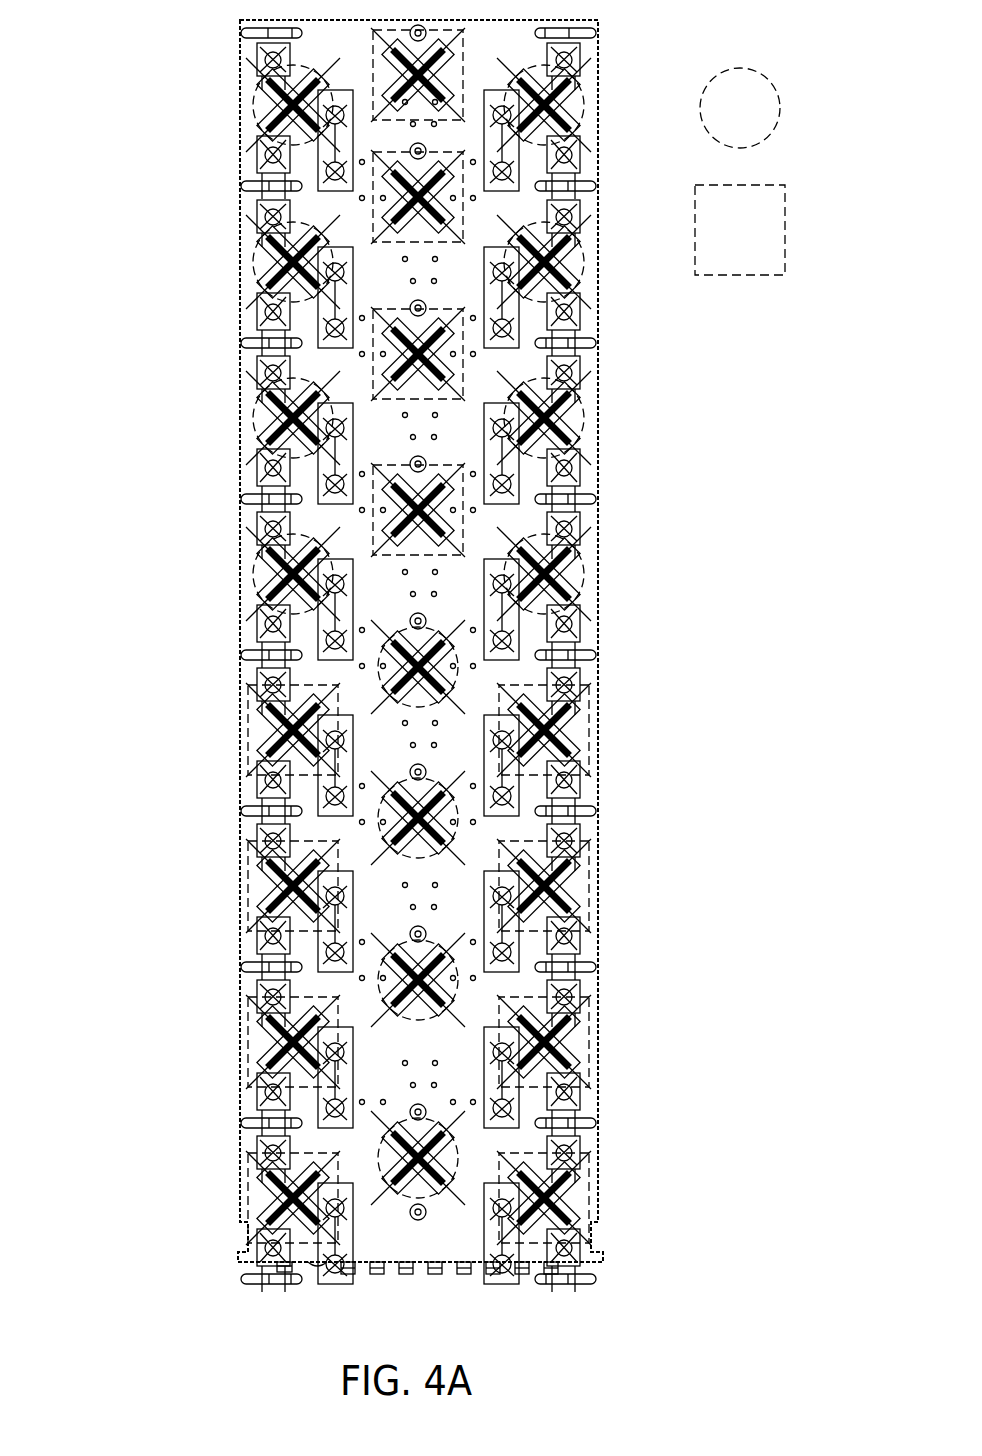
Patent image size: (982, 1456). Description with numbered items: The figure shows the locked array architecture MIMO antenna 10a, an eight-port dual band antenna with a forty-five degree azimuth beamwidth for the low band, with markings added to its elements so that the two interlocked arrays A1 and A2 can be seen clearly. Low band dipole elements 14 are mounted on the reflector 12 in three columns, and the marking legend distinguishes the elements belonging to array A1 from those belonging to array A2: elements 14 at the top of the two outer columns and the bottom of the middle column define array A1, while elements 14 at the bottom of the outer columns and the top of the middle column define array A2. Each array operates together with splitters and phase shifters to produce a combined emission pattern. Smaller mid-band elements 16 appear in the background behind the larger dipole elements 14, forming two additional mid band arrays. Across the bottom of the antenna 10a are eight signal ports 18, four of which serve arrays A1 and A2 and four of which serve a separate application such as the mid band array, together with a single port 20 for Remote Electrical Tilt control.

The MIMO antenna 10a is at (150, 112).
The reflector 12 is at (427, 740).
The antenna elements 14 is at (258, 284).
The mid-band elements 16 is at (248, 803).
The signal ports 18 is at (492, 1275).
The RET port 20 is at (284, 1273).
The array A1 is at (761, 108).
The array A2 is at (761, 230).